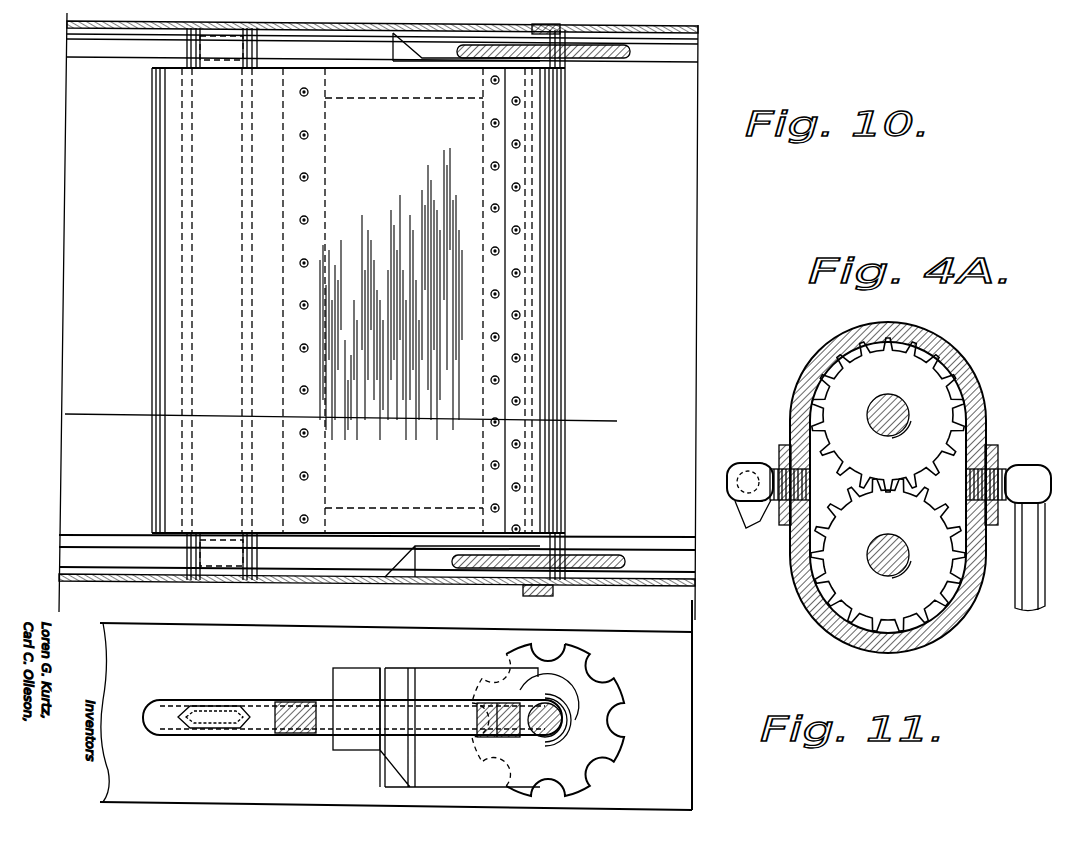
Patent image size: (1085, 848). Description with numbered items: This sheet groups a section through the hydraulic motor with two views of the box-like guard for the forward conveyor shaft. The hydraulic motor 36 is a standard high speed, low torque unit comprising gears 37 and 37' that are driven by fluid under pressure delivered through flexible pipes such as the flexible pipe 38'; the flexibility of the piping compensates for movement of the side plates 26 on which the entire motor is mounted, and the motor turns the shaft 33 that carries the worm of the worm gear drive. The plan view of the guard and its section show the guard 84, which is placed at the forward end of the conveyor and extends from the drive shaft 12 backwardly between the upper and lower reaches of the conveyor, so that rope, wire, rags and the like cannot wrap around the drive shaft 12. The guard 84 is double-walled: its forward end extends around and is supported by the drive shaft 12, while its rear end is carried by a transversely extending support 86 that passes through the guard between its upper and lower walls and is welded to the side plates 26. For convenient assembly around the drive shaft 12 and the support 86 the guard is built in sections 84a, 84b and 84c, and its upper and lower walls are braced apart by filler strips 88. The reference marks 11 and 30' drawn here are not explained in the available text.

In FIG. 10, the side plates 26 is at (68, 42).
In FIG. 10, the transversely extending support 86 is at (200, 556).
In FIG. 11, the transversely extending support 86 is at (244, 710).
In FIG. 10, the guard 84 is at (358, 300).
In FIG. 10, the guard section 84a is at (541, 160).
In FIG. 10, the guard section 84b is at (493, 452).
In FIG. 10, the guard section 84c is at (166, 270).
In FIG. 10, the shaft 11 is at (352, 416).
In FIG. 4A, the hydraulic motor 36 is at (867, 641).
In FIG. 4A, the gear 37 is at (920, 415).
In FIG. 4A, the gear 37' is at (868, 555).
In FIG. 4A, the shaft 33 is at (905, 412).
In FIG. 4A, the inlet pipe 30' is at (768, 510).
In FIG. 4A, the flexible pipe 38' is at (1008, 554).
In FIG. 11, the filler strips 88 is at (283, 733).
In FIG. 11, the drive shaft 12 is at (548, 704).